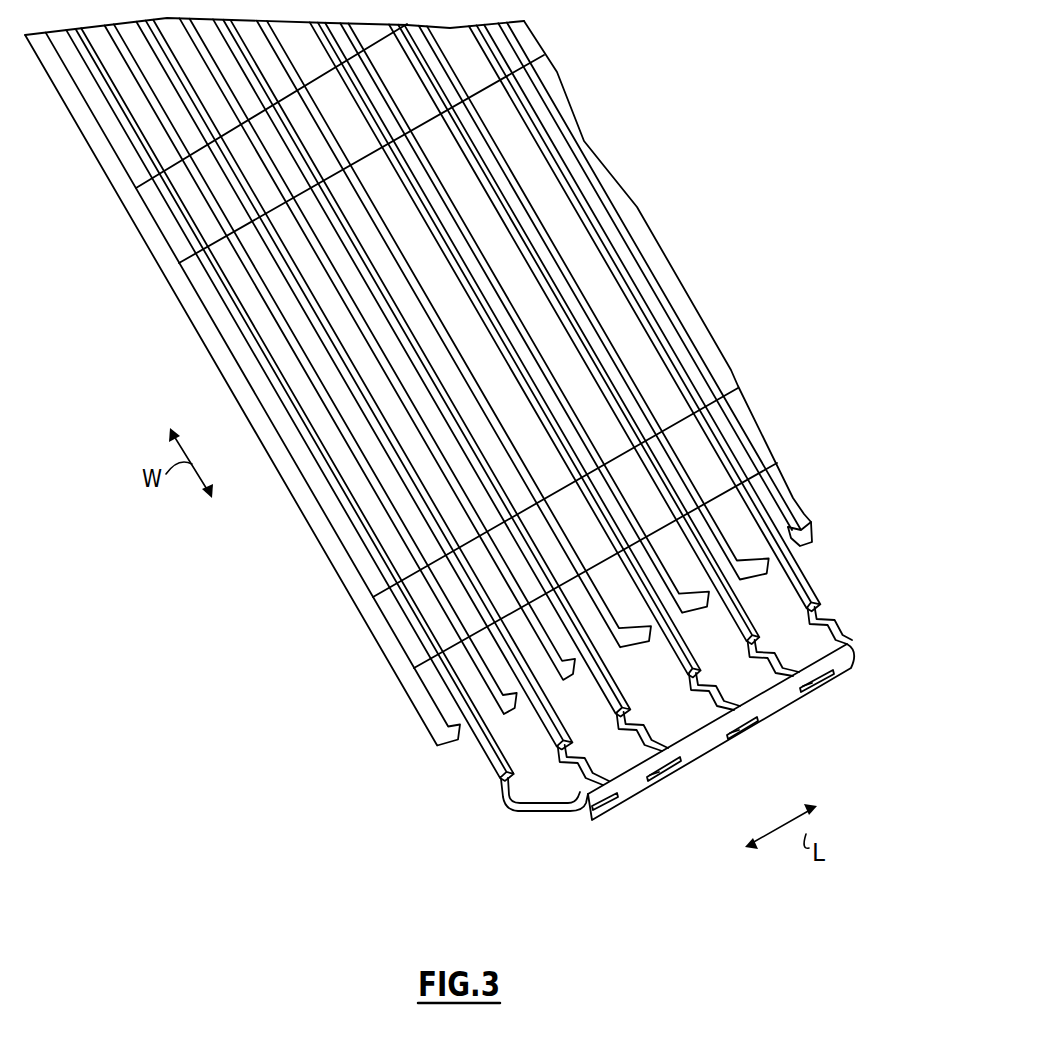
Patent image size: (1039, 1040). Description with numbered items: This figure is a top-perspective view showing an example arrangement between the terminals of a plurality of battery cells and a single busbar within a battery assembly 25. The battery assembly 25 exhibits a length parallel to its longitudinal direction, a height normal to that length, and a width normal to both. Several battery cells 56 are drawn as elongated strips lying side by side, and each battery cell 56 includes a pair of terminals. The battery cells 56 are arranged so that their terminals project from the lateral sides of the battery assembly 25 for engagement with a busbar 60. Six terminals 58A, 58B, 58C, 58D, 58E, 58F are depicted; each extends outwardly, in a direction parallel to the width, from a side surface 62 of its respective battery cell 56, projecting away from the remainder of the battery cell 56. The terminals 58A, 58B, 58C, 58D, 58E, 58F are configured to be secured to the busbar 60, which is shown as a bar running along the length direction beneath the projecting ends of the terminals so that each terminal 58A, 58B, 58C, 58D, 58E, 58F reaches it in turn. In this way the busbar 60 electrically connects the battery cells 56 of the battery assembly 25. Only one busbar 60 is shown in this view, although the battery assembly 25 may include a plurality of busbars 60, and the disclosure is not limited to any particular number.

The battery assembly 25 is at (369, 779).
The battery cell 56 is at (427, 642).
The terminal 58A is at (535, 795).
The terminal 58B is at (593, 790).
The terminal 58C is at (635, 770).
The terminal 58D is at (745, 715).
The terminal 58E is at (790, 685).
The terminal 58F is at (832, 628).
The busbar 60 is at (700, 748).
The side surface 62 is at (463, 736).